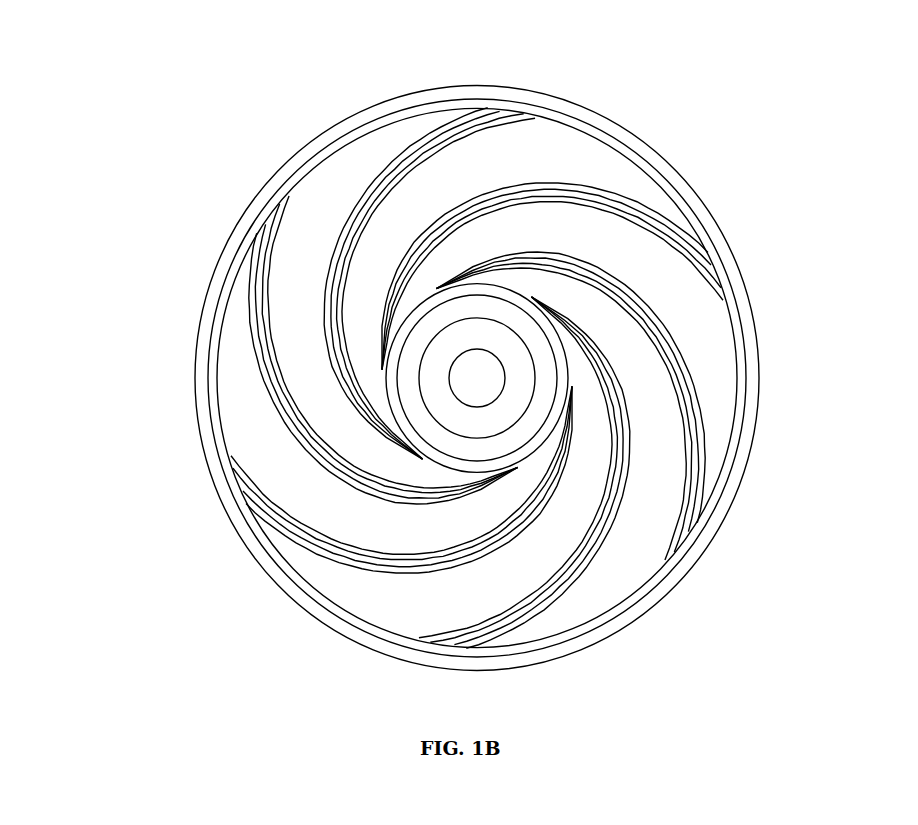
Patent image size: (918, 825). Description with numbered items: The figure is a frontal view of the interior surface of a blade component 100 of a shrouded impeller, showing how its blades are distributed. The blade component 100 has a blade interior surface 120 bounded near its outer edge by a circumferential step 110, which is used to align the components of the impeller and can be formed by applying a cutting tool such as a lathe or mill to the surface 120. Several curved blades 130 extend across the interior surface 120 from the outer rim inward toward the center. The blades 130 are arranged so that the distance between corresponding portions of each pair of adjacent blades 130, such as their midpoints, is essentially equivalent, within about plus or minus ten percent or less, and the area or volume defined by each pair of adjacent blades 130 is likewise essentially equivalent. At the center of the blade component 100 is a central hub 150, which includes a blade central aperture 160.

The blade component 100 is at (458, 378).
The circumferential step 110 is at (210, 352).
The blade interior surface 120 is at (481, 378).
The blade 130 is at (682, 357).
The central hub 150 is at (523, 330).
The blade central aperture 160 is at (482, 382).